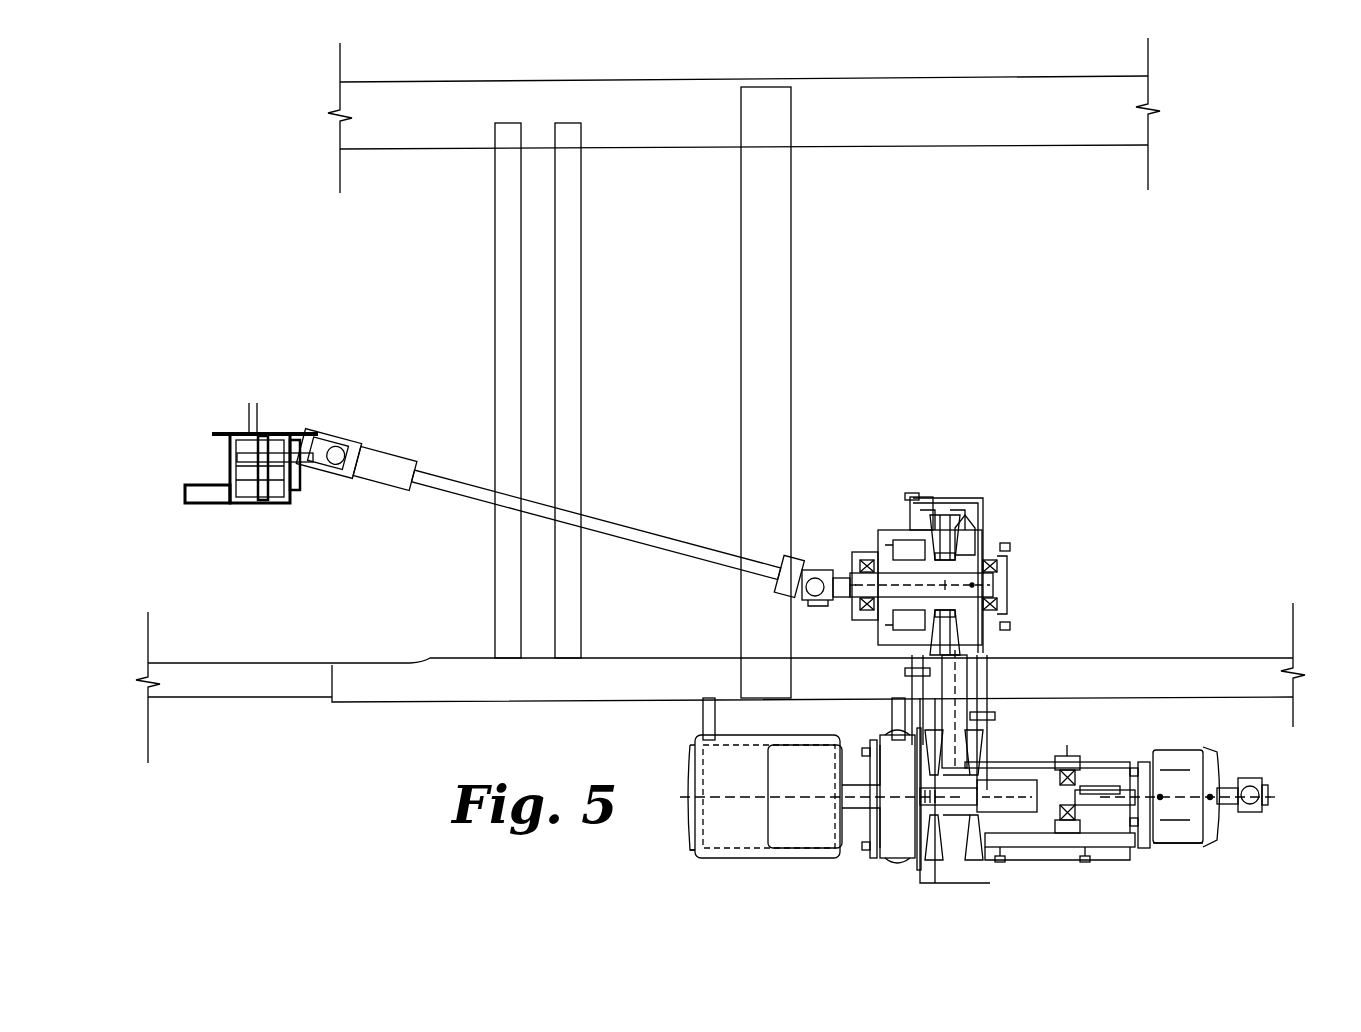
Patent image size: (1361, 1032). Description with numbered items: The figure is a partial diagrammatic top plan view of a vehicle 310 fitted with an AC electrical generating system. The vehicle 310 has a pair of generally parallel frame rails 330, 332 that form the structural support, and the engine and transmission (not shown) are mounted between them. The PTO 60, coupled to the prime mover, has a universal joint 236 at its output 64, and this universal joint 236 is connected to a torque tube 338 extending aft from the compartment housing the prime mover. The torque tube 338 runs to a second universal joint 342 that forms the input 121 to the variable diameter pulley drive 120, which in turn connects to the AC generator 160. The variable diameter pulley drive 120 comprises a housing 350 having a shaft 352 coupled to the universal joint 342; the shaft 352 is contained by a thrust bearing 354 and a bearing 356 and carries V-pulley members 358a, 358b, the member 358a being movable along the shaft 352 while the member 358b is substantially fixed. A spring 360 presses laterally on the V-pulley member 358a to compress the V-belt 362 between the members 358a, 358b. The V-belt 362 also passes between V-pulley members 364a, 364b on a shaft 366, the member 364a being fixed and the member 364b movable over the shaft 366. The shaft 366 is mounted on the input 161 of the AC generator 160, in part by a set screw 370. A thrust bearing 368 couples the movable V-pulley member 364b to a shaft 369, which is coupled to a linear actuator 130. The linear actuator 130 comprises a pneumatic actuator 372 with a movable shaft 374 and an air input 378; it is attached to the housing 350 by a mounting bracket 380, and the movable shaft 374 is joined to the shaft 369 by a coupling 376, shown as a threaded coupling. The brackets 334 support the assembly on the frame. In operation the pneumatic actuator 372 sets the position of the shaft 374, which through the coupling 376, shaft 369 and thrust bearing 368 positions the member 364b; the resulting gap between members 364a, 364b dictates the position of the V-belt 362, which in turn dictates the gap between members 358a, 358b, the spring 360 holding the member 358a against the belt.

The frame rail 330 is at (862, 74).
The vehicle 310 is at (676, 207).
The torque tube 338 is at (704, 545).
The frame rail 332 is at (1226, 652).
The PTO 60 is at (272, 512).
The universal joint 236 is at (344, 503).
The output 64 is at (591, 470).
The input 121 is at (802, 560).
The universal joint 342 is at (830, 568).
The variable diameter pulley drive 120 is at (961, 594).
The bearing 356 is at (862, 618).
The spring 360 is at (900, 545).
The shaft 352 is at (1000, 578).
The thrust bearing 354 is at (1005, 603).
The housing 350 is at (948, 512).
The V-pulley member 358a is at (936, 515).
The V-pulley member 358b is at (968, 518).
The V-belt 362 is at (975, 525).
The mounting posts 334 is at (702, 722).
The AC generator 160 is at (824, 824).
The V-pulley member 364a is at (910, 733).
The input 161 is at (918, 800).
The set screw 370 is at (925, 850).
The shaft 366 is at (980, 858).
The V-pulley member 364b is at (980, 760).
The mounting bracket 380 is at (1040, 860).
The thrust bearing 368 is at (1072, 768).
The shaft 369 is at (1100, 806).
The movable shaft 374 is at (1135, 775).
The linear actuator 130 is at (1229, 807).
The pneumatic actuator 372 is at (1208, 748).
The coupling 376 is at (1165, 842).
The air input 378 is at (1268, 802).